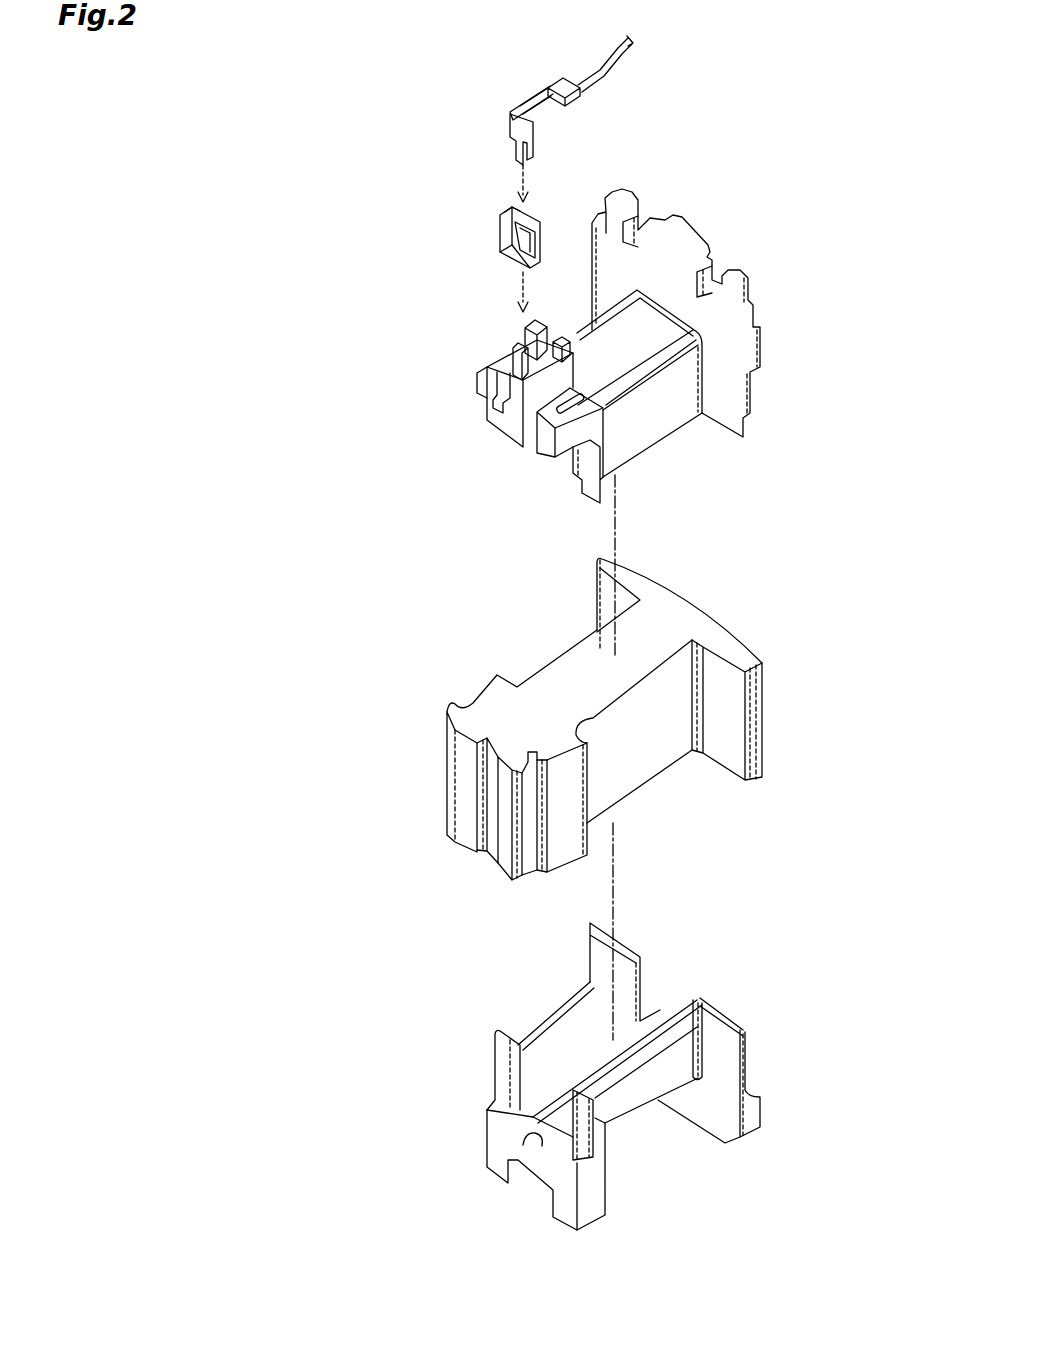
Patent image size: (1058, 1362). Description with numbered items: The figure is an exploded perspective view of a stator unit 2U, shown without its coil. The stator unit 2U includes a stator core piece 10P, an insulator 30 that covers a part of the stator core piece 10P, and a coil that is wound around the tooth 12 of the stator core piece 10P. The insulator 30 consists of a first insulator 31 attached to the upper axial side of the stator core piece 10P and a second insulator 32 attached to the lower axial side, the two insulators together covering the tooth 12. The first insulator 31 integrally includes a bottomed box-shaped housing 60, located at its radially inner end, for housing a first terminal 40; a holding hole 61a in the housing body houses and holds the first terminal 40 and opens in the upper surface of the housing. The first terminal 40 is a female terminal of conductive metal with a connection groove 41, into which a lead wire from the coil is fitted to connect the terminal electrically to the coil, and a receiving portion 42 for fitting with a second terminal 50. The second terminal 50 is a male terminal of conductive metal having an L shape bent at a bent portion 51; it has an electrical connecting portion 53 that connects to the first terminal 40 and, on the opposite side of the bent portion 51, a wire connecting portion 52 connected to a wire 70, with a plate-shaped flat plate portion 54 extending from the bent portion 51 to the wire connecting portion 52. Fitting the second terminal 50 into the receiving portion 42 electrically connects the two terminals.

The stator unit 2U is at (278, 247).
The stator core piece 10P is at (730, 589).
The tooth 12 is at (657, 755).
The insulator 30 is at (300, 698).
The first insulator 31 is at (462, 476).
The second insulator 32 is at (471, 1024).
The first terminal 40 is at (480, 235).
The connection groove 41 is at (507, 258).
The receiving portion 42 is at (522, 208).
The second terminal 50 is at (478, 113).
The bent portion 51 is at (513, 113).
The wire connecting portion 52 is at (560, 78).
The electrical connecting portion 53 is at (513, 133).
The flat plate portion 54 is at (540, 106).
The housing 60 is at (479, 387).
The holding hole 61a is at (507, 343).
The wire 70 is at (607, 72).